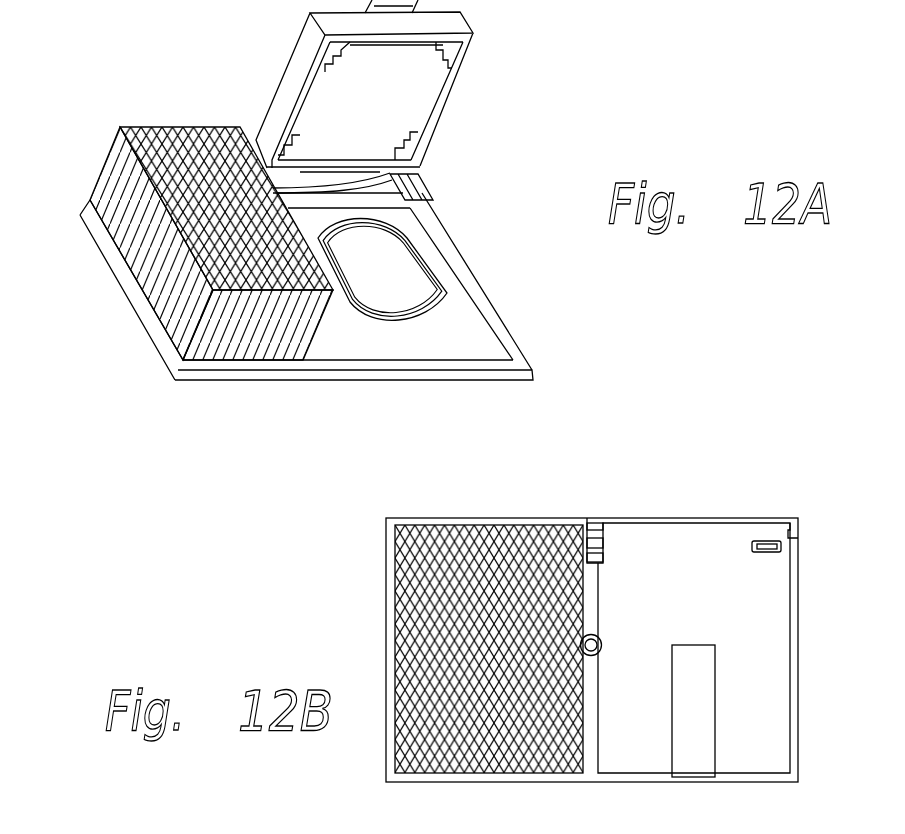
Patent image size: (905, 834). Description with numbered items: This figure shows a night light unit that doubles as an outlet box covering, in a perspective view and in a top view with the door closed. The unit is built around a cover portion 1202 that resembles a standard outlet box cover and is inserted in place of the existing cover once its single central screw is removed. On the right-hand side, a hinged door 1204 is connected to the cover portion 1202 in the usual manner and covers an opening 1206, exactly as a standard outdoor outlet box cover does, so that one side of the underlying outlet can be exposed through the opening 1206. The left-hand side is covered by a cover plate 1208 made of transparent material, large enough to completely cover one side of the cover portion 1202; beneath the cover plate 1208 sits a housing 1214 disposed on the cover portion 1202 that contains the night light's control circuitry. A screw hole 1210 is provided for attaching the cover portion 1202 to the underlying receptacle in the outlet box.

In FIG. 12A, the cover portion 1202 is at (522, 358).
In FIG. 12B, the cover portion 1202 is at (563, 778).
In FIG. 12A, the hinged door 1204 is at (452, 80).
In FIG. 12B, the hinged door 1204 is at (713, 584).
In FIG. 12A, the opening 1206 is at (400, 267).
In FIG. 12A, the cover plate 1208 is at (170, 127).
In FIG. 12B, the cover plate 1208 is at (395, 568).
In FIG. 12B, the screw hole 1210 is at (600, 638).
In FIG. 12A, the housing 1214 is at (88, 204).